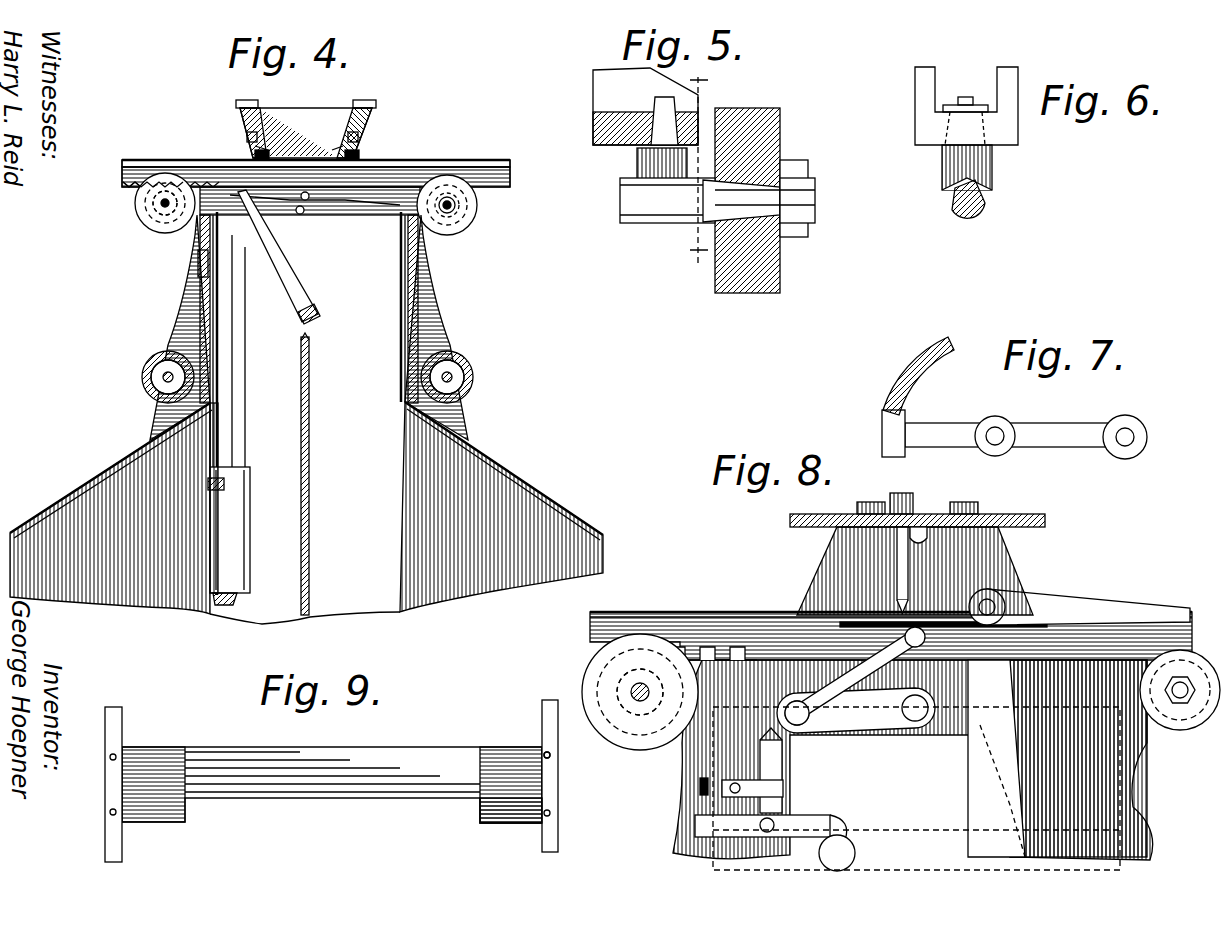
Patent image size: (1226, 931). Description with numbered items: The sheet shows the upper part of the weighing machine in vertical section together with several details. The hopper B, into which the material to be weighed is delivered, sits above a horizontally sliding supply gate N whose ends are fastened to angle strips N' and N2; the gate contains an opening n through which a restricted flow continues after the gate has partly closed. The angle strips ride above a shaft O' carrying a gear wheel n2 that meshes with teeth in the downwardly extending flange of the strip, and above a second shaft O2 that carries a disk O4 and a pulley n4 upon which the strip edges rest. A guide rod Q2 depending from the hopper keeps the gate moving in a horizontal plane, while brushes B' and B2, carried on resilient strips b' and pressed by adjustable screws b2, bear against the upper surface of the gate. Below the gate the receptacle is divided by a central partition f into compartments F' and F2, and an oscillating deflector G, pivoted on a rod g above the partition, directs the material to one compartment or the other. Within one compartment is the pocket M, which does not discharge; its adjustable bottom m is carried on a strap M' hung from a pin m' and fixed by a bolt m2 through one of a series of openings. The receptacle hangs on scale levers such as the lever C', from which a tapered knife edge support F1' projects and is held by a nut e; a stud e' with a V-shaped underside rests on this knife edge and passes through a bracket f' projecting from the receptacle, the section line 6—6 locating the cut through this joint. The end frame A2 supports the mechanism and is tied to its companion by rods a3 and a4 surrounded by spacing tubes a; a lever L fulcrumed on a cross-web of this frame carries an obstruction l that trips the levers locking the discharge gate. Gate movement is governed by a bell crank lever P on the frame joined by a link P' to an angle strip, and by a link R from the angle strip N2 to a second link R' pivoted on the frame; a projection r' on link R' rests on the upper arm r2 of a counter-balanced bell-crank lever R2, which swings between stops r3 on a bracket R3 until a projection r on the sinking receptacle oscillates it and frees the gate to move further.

In FIG. 4, the hopper B is at (306, 113).
In FIG. 8, the hopper B is at (917, 499).
In FIG. 4, the resilient strip b' is at (309, 110).
In FIG. 4, the adjustable screw b2 is at (250, 136).
In FIG. 4, the brush B' is at (220, 141).
In FIG. 4, the brush B2 is at (358, 158).
In FIG. 4, the supply gate N is at (316, 171).
In FIG. 8, the supply gate N is at (915, 572).
In FIG. 9, the supply gate N is at (332, 770).
In FIG. 4, the angle strip N2 is at (457, 160).
In FIG. 8, the angle strip N2 is at (665, 612).
In FIG. 9, the angle strip N2 is at (125, 718).
In FIG. 9, the angle strip N' is at (506, 773).
In FIG. 9, the opening n is at (470, 812).
In FIG. 4, the gear wheel n2 is at (158, 230).
In FIG. 9, the gear wheel n2 is at (568, 763).
In FIG. 8, the pulley n4 is at (1078, 758).
In FIG. 4, the shaft O' is at (136, 203).
In FIG. 8, the shaft O' is at (617, 692).
In FIG. 4, the shaft O2 is at (470, 215).
In FIG. 8, the shaft O2 is at (600, 680).
In FIG. 4, the disk O4 is at (468, 203).
In FIG. 8, the disk O4 is at (1160, 650).
In FIG. 4, the pin m' is at (173, 257).
In FIG. 4, the bolt m2 is at (224, 482).
In FIG. 4, the pocket M is at (203, 530).
In FIG. 4, the strap M' is at (242, 496).
In FIG. 4, the adjustable bottom m is at (196, 620).
In FIG. 4, the oscillating deflector G is at (283, 268).
In FIG. 4, the rod g is at (318, 320).
In FIG. 4, the tube a is at (152, 388).
In FIG. 4, the rod a3 is at (150, 366).
In FIG. 4, the rod a4 is at (472, 372).
In FIG. 4, the central partition f is at (332, 474).
In FIG. 4, the compartment F2 is at (110, 510).
In FIG. 4, the compartment F' is at (501, 507).
In FIG. 5, the bracket f' is at (615, 106).
In FIG. 6, the bracket f' is at (939, 106).
In FIG. 5, the stud e' is at (625, 145).
In FIG. 6, the stud e' is at (996, 167).
In FIG. 5, the nut e is at (813, 194).
In FIG. 5, the knife edge support F1' is at (684, 220).
In FIG. 6, the knife edge support F1' is at (1000, 208).
In FIG. 5, the scale lever C' is at (764, 204).
In FIG. 5, the section line 6— 6 is at (695, 175).
In FIG. 7, the obstruction l is at (917, 355).
In FIG. 7, the lever L is at (1045, 428).
In FIG. 8, the guide rod Q2 is at (897, 557).
In FIG. 8, the link P' is at (1079, 591).
In FIG. 8, the bell crank lever P is at (916, 765).
In FIG. 8, the link R is at (860, 673).
In FIG. 8, the link R' is at (856, 730).
In FIG. 8, the projection r' is at (767, 701).
In FIG. 8, the arm r2 is at (775, 775).
In FIG. 8, the stops r3 is at (785, 790).
In FIG. 8, the projection r is at (667, 786).
In FIG. 8, the bell-crank lever R2 is at (700, 830).
In FIG. 8, the bracket R3 is at (760, 822).
In FIG. 8, the end frame A2 is at (1143, 832).